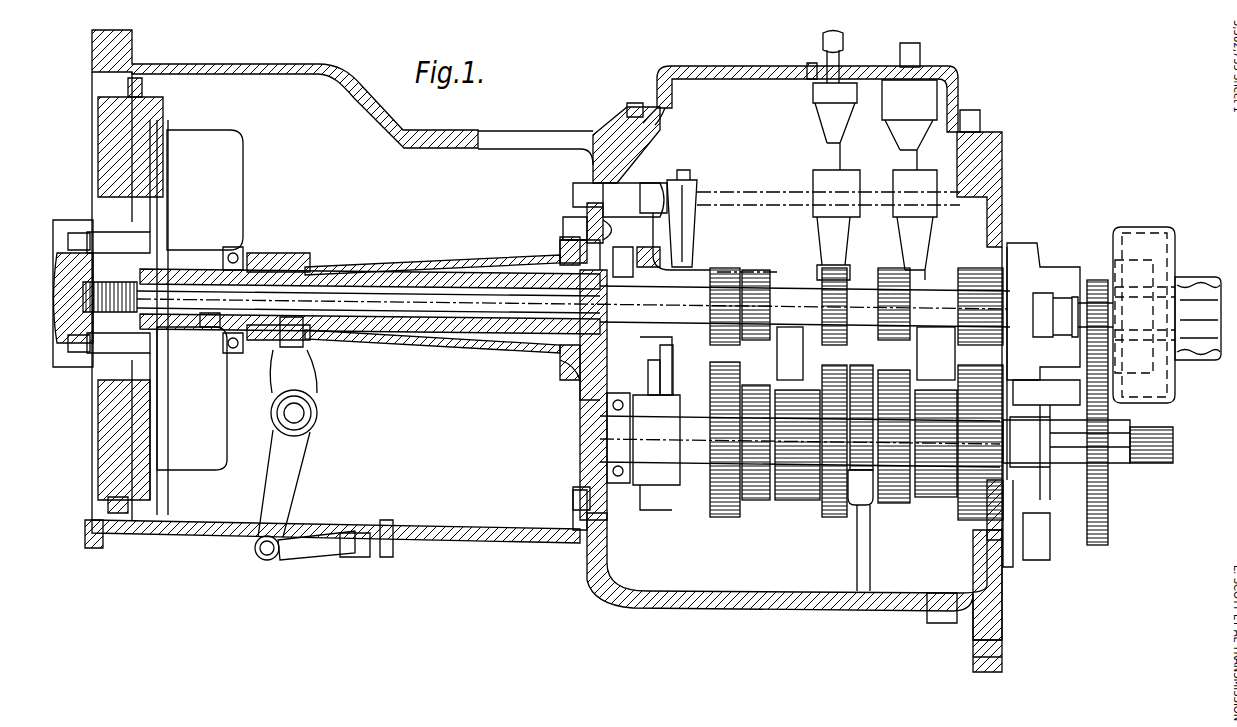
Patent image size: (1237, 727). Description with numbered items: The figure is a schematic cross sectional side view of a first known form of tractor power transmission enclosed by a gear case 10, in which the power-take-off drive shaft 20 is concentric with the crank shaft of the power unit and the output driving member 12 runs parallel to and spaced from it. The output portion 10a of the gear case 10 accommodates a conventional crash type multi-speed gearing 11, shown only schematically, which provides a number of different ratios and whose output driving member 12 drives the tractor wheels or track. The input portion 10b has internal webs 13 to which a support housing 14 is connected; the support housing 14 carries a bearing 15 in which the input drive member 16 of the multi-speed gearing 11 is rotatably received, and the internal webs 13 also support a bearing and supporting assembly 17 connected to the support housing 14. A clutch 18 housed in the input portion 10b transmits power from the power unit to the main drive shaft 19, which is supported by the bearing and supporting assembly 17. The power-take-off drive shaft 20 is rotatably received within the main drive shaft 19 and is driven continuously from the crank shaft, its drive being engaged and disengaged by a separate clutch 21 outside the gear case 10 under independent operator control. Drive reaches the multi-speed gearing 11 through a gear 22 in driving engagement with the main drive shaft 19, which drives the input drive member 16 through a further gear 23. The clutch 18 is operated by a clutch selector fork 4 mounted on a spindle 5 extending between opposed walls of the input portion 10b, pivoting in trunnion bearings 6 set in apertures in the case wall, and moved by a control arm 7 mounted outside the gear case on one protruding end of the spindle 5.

The clutch selector fork 4 is at (307, 358).
The spindle 5 is at (306, 412).
The trunnion bearings 6 is at (314, 426).
The control arm 7 is at (280, 500).
The gear case 10 is at (505, 540).
The output portion 10a is at (812, 605).
The input portion 10b is at (437, 535).
The multi-speed gearing 11 is at (875, 508).
The output driving member 12 is at (1150, 445).
The internal webs 13 is at (612, 163).
The support housing 14 is at (598, 475).
The bearing 15 is at (610, 415).
The input drive member 16 is at (669, 425).
The bearing and supporting assembly 17 is at (483, 268).
The clutch 18 is at (208, 143).
The main drive shaft 19 is at (420, 282).
The power-take-off drive shaft 20 is at (383, 282).
The clutch 21 is at (1178, 258).
The gear 22 is at (662, 345).
The further gear 23 is at (660, 366).